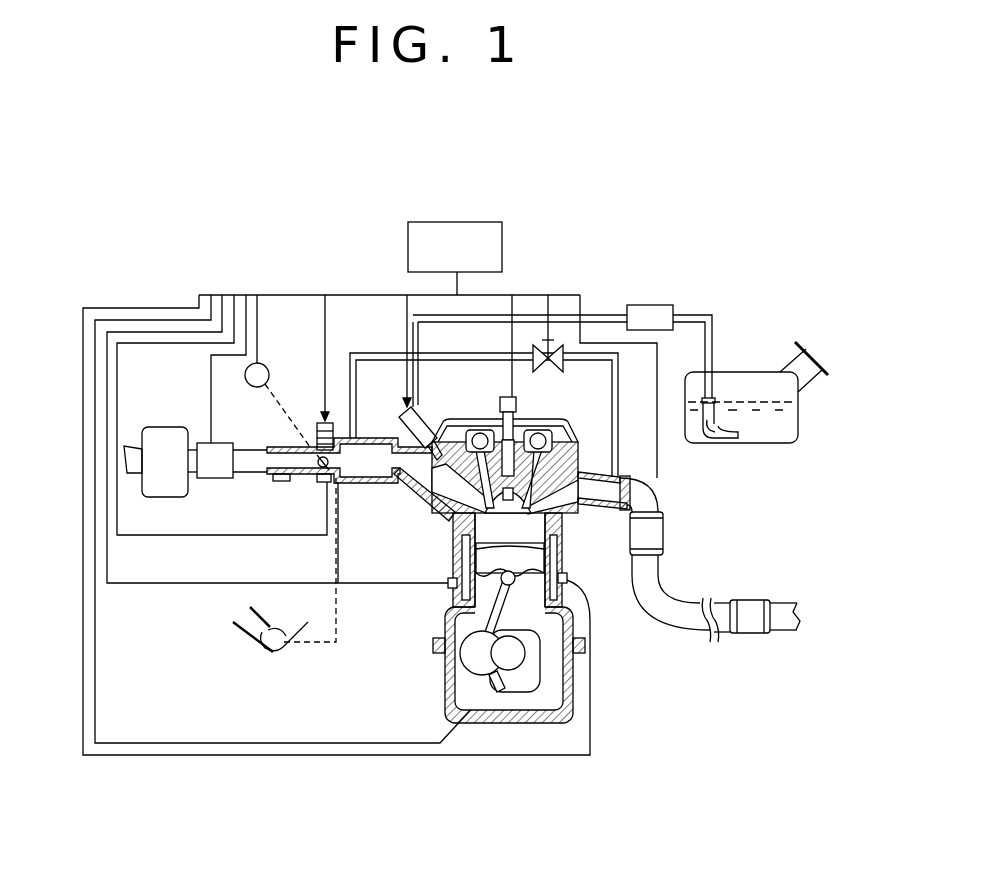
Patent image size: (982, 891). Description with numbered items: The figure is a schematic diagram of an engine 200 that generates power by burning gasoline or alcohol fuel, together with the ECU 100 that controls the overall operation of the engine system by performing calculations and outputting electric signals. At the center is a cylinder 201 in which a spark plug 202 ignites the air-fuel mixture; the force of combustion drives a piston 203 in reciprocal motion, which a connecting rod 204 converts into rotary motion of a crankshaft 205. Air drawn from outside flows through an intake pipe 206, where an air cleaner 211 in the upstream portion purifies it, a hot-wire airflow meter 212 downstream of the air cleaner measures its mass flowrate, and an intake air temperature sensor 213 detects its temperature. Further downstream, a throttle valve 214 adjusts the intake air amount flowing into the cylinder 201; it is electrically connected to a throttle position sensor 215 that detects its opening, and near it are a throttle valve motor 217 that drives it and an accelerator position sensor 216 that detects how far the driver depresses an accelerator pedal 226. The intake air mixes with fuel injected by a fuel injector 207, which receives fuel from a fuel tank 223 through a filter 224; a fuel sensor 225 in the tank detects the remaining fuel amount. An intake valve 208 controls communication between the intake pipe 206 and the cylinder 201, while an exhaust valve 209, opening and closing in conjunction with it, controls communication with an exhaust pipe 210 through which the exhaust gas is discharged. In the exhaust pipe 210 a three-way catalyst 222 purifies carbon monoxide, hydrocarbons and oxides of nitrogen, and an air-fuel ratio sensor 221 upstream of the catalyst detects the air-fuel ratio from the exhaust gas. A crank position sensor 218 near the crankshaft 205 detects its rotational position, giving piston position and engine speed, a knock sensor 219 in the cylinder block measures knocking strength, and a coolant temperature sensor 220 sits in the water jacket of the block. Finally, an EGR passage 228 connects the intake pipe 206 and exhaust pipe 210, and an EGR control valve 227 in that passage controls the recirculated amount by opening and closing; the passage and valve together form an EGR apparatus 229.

The ECU 100 is at (502, 224).
The engine 200 is at (295, 264).
The cylinder 201 is at (487, 543).
The spark plug 202 is at (575, 463).
The piston 203 is at (441, 615).
The connecting rod 204 is at (433, 643).
The crankshaft 205 is at (510, 657).
The intake pipe 206 is at (248, 474).
The fuel injector 207 is at (391, 428).
The intake valve 208 is at (450, 518).
The exhaust valve 209 is at (563, 517).
The exhaust pipe 210 is at (612, 492).
The air cleaner 211 is at (166, 486).
The airflow meter 212 is at (208, 478).
The intake air temperature sensor 213 is at (271, 478).
The throttle valve 214 is at (303, 481).
The throttle position sensor 215 is at (323, 483).
The accelerator position sensor 216 is at (254, 382).
The throttle valve motor 217 is at (312, 440).
The crank position sensor 218 is at (478, 683).
The knock sensor 219 is at (452, 592).
The coolant temperature sensor 220 is at (585, 608).
The air-fuel ratio sensor 221 is at (654, 488).
The three-way catalyst 222 is at (654, 538).
The fuel tank 223 is at (780, 432).
The filter 224 is at (673, 307).
The fuel sensor 225 is at (705, 425).
The accelerator pedal 226 is at (283, 652).
The EGR control valve 227 is at (560, 346).
The EGR passage 228 is at (583, 358).
The EGR apparatus 229 is at (572, 337).